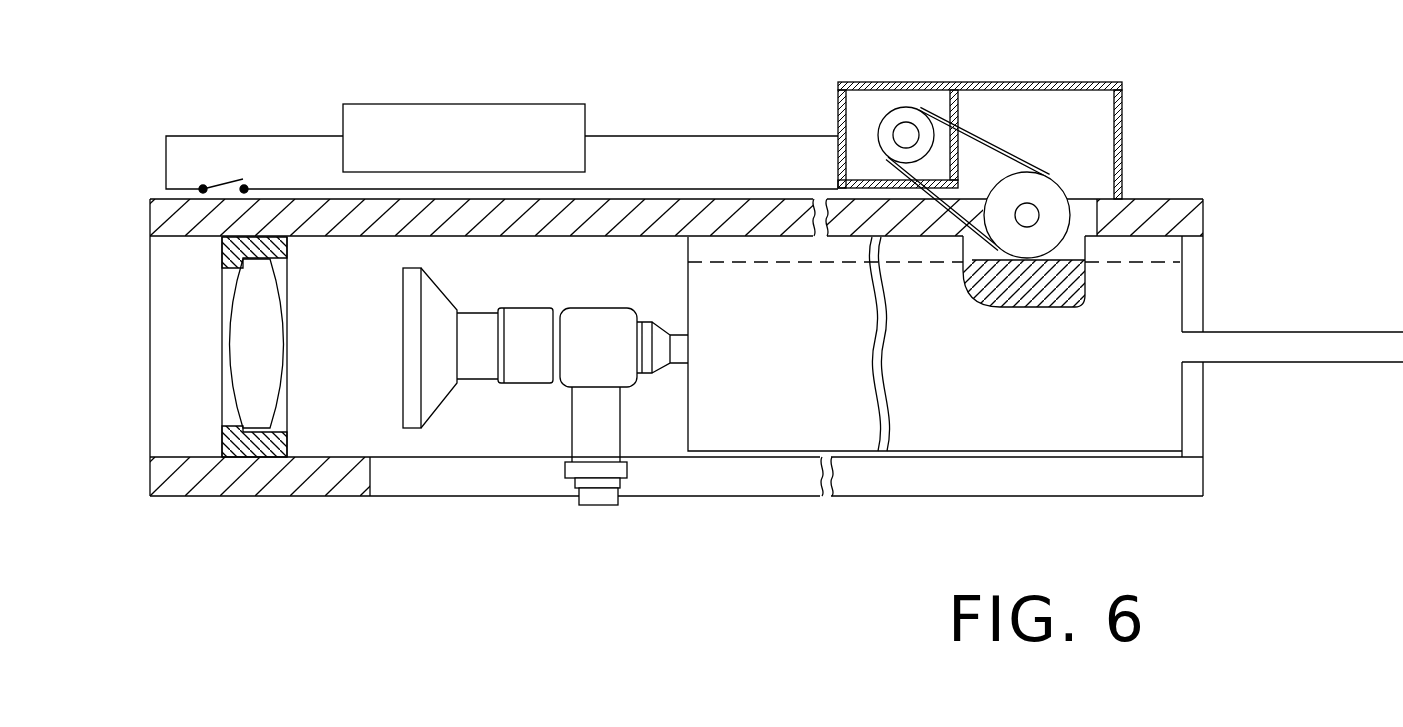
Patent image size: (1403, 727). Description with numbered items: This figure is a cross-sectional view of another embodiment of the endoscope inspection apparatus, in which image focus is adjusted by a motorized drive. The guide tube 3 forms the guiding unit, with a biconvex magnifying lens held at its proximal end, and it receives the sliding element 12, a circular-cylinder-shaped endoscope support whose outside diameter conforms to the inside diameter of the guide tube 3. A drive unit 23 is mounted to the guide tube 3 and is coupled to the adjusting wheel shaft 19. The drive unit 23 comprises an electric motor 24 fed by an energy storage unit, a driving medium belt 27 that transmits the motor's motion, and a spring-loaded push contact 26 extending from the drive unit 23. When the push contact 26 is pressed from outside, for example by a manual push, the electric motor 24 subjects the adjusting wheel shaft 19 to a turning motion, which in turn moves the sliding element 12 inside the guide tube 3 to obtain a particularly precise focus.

The guide tube 3 is at (150, 215).
The sliding element 12 is at (742, 275).
The adjusting wheel shaft 19 is at (1029, 213).
The drive unit 23 is at (1062, 66).
The electric motor 24 is at (417, 120).
The spring-loaded push contact 26 is at (225, 182).
The driving medium belt 27 is at (987, 137).